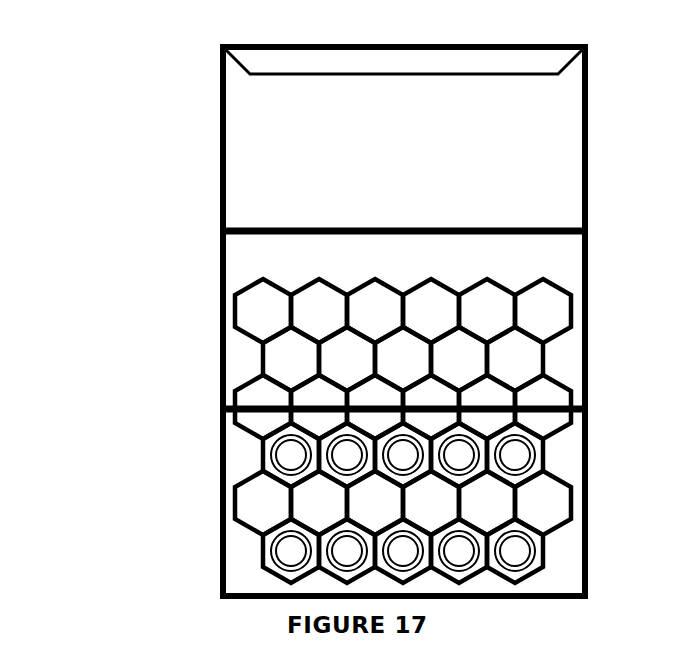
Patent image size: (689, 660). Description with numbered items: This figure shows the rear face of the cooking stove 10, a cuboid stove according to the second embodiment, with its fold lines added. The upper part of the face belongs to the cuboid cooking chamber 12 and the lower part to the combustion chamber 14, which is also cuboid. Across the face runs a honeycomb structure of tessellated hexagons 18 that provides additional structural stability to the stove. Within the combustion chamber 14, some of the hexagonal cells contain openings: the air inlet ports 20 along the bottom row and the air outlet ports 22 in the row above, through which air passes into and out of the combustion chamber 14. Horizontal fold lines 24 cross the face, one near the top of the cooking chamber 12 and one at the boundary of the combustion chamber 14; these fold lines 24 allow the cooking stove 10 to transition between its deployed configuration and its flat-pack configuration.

The cooking stove 10 is at (94, 149).
The cooking chamber 12 is at (583, 315).
The combustion chamber 14 is at (579, 487).
The tessellated hexagons 18 is at (263, 362).
The air inlet ports 20 is at (268, 552).
The air outlet ports 22 is at (268, 460).
The fold lines 24 is at (549, 231).